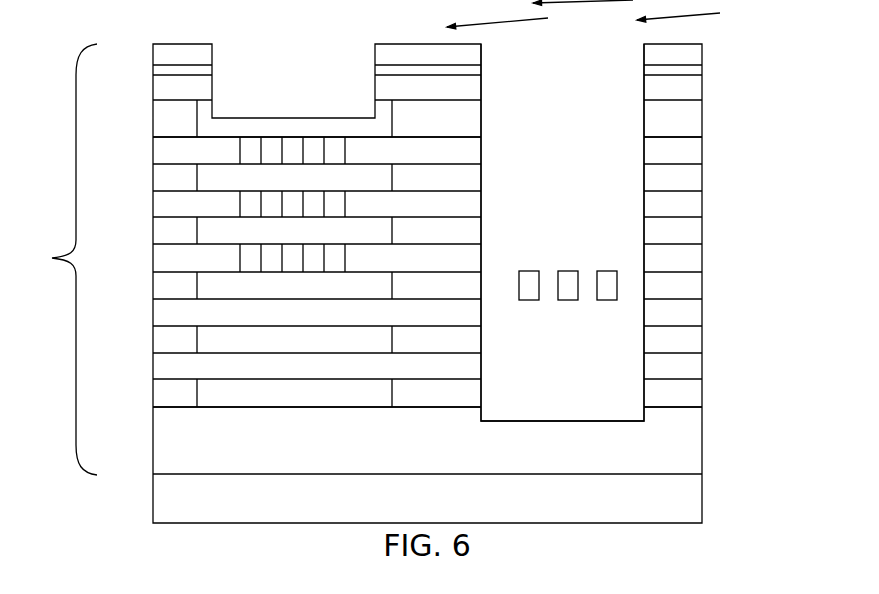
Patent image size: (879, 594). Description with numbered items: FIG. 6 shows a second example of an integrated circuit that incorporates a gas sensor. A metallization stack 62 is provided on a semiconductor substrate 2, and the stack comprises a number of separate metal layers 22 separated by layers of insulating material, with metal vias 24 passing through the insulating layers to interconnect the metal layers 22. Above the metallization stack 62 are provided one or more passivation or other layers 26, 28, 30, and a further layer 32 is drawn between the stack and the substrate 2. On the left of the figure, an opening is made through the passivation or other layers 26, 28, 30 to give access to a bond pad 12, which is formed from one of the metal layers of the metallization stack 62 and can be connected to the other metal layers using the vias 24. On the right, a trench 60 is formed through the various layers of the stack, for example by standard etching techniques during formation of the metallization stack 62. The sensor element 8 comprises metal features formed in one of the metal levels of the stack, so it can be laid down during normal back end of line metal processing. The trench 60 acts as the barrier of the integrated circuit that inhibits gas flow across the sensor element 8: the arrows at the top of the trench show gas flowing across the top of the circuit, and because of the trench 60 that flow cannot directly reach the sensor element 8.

The semiconductor substrate 2 is at (712, 502).
The sensor element 8 is at (568, 285).
The bond pad 12 is at (295, 128).
The metal layers 22 is at (215, 183).
The metal vias 24 is at (237, 152).
The passivation or other layer 26 is at (688, 88).
The passivation or other layer 28 is at (692, 71).
The passivation or other layer 30 is at (688, 55).
The bottom insulating layer 32 is at (672, 450).
The trench 60 is at (567, 145).
The metallization stack 62 is at (55, 259).